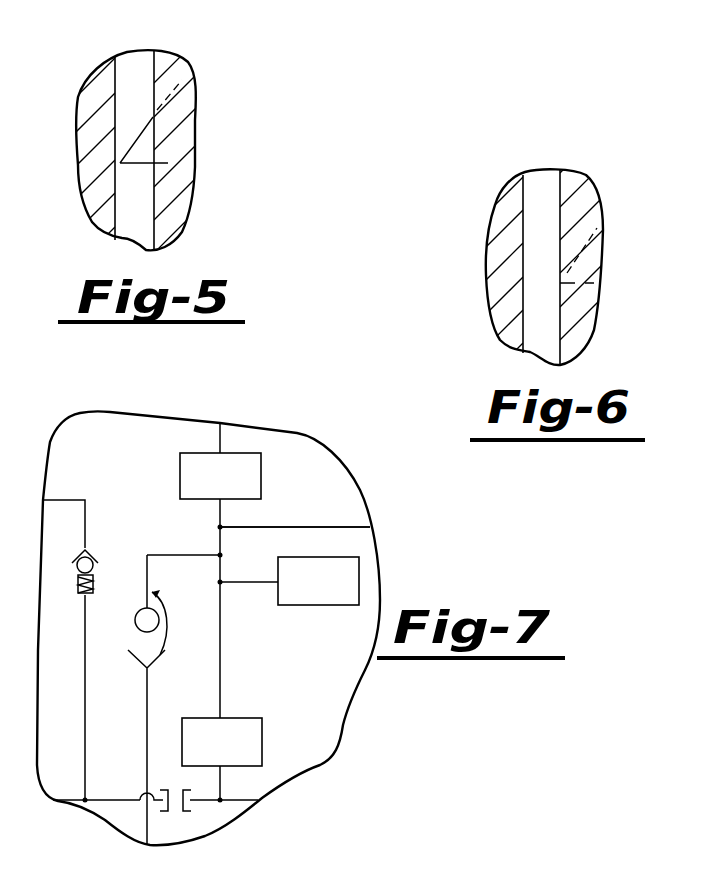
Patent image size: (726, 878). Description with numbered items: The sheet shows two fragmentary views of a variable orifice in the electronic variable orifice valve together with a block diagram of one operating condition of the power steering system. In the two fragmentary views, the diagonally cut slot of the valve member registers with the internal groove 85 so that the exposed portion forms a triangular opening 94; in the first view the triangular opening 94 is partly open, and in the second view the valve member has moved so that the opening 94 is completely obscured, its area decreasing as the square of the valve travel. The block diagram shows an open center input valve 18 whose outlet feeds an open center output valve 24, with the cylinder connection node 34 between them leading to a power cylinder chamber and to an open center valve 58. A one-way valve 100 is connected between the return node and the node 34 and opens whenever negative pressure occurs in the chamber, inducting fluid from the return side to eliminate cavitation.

In FIG. 5, the internal groove 85 is at (130, 83).
In FIG. 6, the internal groove 85 is at (542, 183).
In FIG. 5, the triangular opening 94 is at (143, 152).
In FIG. 6, the triangular opening 94 is at (590, 258).
In FIG. 7, the open center input valve 18 is at (180, 483).
In FIG. 7, the cylinder connection node 34 is at (221, 515).
In FIG. 7, the one-way valve 100 is at (145, 610).
In FIG. 7, the open center valve 58 is at (335, 606).
In FIG. 7, the open center output valve 24 is at (263, 742).